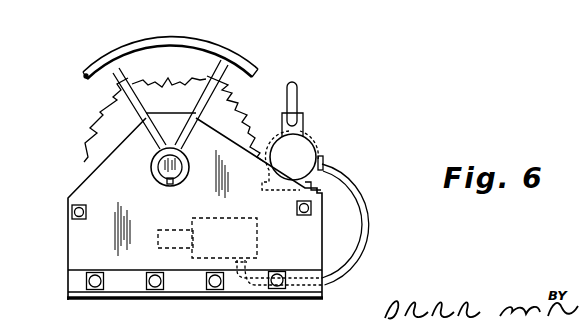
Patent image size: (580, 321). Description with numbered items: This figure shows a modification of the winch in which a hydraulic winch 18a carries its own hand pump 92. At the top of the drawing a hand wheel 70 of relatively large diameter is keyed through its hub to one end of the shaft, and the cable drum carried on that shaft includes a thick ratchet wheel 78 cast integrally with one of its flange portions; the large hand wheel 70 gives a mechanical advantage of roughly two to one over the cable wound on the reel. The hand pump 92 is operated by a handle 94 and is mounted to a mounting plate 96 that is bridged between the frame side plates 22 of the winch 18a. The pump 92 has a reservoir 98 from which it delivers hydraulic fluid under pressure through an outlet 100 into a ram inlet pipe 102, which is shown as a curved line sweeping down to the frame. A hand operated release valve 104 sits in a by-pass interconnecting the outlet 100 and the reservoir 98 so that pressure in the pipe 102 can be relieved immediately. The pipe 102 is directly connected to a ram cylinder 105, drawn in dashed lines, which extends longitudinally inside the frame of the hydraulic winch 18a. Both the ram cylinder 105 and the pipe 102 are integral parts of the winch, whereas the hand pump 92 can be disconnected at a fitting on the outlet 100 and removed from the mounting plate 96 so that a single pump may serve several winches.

The hand wheel 70 is at (136, 38).
The ratchet wheel 78 is at (92, 131).
The frame side plates 22 is at (323, 258).
The hydraulic winch 18a is at (275, 300).
The ram cylinder 105 is at (177, 227).
The hand pump 92 is at (305, 131).
The handle 94 is at (298, 96).
The reservoir 98 is at (279, 140).
The hand operated release valve 104 is at (312, 141).
The outlet 100 is at (323, 161).
The mounting plate 96 is at (320, 190).
The ram inlet pipe 102 is at (367, 208).